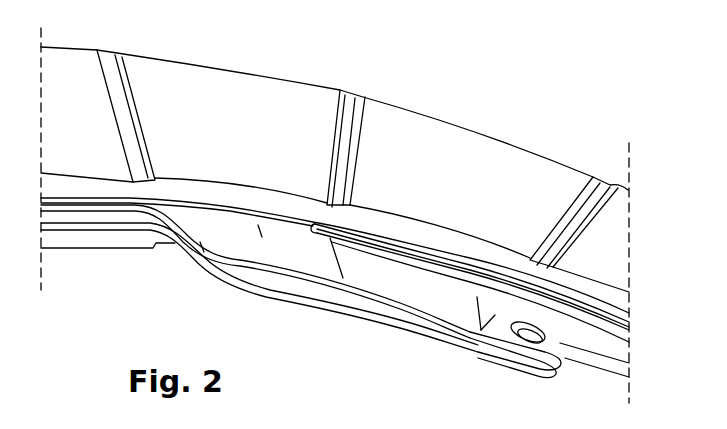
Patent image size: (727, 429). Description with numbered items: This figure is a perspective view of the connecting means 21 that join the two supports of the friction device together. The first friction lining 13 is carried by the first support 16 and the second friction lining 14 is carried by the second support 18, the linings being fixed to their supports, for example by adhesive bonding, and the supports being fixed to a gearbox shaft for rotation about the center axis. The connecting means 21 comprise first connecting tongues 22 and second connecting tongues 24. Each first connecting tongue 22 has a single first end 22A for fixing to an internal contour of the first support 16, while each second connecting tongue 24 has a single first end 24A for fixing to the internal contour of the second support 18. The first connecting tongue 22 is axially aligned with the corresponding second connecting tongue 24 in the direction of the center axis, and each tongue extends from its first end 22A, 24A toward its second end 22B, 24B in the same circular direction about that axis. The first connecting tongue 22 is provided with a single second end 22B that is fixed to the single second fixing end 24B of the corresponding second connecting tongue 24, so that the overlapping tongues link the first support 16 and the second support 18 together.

The first friction lining 13 is at (436, 148).
The second friction lining 14 is at (108, 242).
The first support 16 is at (577, 307).
The second support 18 is at (590, 327).
The connecting means 21 is at (447, 352).
The first connecting tongue 22 is at (432, 295).
The first end of first connecting tongue 22A is at (262, 237).
The second end of first connecting tongue 22B is at (495, 315).
The second connecting tongue 24 is at (360, 298).
The first end of second connecting tongue 24A is at (228, 270).
The second fixing end of second connecting tongue 24B is at (543, 368).